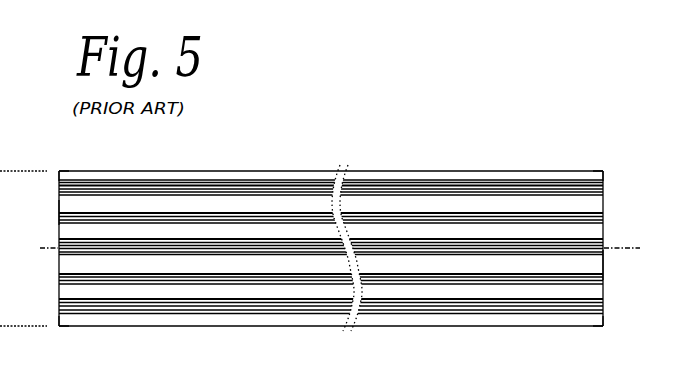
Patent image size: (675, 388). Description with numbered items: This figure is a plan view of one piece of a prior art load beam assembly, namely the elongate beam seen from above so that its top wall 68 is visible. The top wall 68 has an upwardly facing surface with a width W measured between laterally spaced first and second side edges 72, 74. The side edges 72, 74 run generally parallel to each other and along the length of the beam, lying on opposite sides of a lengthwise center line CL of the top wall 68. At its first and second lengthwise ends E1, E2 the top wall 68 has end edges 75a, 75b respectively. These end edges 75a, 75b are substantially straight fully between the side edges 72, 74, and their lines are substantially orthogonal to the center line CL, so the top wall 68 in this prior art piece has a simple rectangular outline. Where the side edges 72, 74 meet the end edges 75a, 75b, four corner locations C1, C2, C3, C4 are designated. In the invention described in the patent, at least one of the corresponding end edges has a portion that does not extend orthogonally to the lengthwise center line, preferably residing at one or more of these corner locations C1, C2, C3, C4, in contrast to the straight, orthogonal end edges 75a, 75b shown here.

The top wall 68 is at (178, 232).
The first side edge 72 is at (450, 171).
The second side edge 74 is at (433, 326).
The end edge 75a is at (603, 293).
The end edge 75b is at (58, 297).
The first lengthwise end E1 is at (603, 262).
The second lengthwise end E2 is at (58, 213).
The corner location C1 is at (603, 327).
The corner location C2 is at (603, 171).
The corner location C3 is at (58, 171).
The corner location C4 is at (58, 327).
The lengthwise center line CL is at (608, 247).
The width W is at (15, 171).